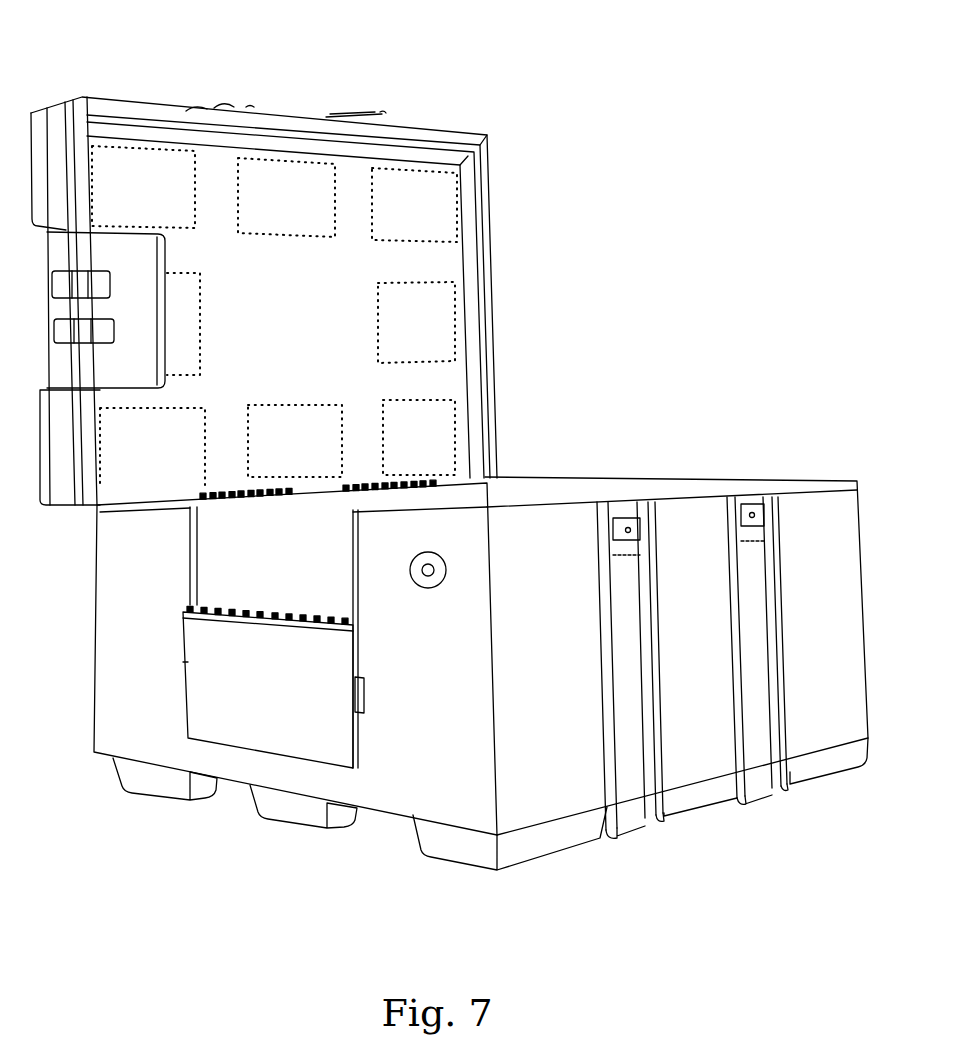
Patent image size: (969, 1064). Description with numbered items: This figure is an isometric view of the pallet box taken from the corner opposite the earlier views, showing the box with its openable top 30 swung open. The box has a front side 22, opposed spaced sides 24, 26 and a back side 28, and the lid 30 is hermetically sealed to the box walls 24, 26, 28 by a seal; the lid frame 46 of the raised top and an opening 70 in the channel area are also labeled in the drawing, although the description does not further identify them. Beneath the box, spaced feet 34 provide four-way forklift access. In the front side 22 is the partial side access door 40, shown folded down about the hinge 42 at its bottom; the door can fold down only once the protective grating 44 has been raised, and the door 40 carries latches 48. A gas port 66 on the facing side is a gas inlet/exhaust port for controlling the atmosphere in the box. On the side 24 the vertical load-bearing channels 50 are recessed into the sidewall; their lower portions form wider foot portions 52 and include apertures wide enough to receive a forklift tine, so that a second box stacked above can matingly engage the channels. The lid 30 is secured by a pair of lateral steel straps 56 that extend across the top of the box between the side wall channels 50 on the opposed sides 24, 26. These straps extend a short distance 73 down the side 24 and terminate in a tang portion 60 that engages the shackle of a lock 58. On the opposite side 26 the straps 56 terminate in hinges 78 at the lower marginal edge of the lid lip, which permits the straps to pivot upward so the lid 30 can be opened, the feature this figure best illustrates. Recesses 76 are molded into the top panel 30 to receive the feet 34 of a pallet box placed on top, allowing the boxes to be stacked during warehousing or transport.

The front side 22 is at (427, 662).
The side 24 is at (537, 651).
The side 26 is at (278, 576).
The back side 28 is at (502, 508).
The openable top 30 is at (386, 276).
The feet 34 is at (285, 810).
The side access door 40 is at (263, 695).
The hinge 42 is at (212, 607).
The protective grating 44 is at (148, 316).
The lid 46 is at (484, 168).
The latches 48 is at (184, 670).
The vertical load-bearing channels 50 is at (646, 641).
The foot portions 52 is at (610, 833).
The lateral steel straps 56 is at (247, 107).
The lock 58 is at (742, 518).
The tang portion 60 is at (228, 106).
The gas port 66 is at (446, 575).
The slots 70 is at (638, 555).
The short distance 73 is at (197, 110).
The recesses 76 is at (134, 199).
The hinges 78 is at (232, 502).